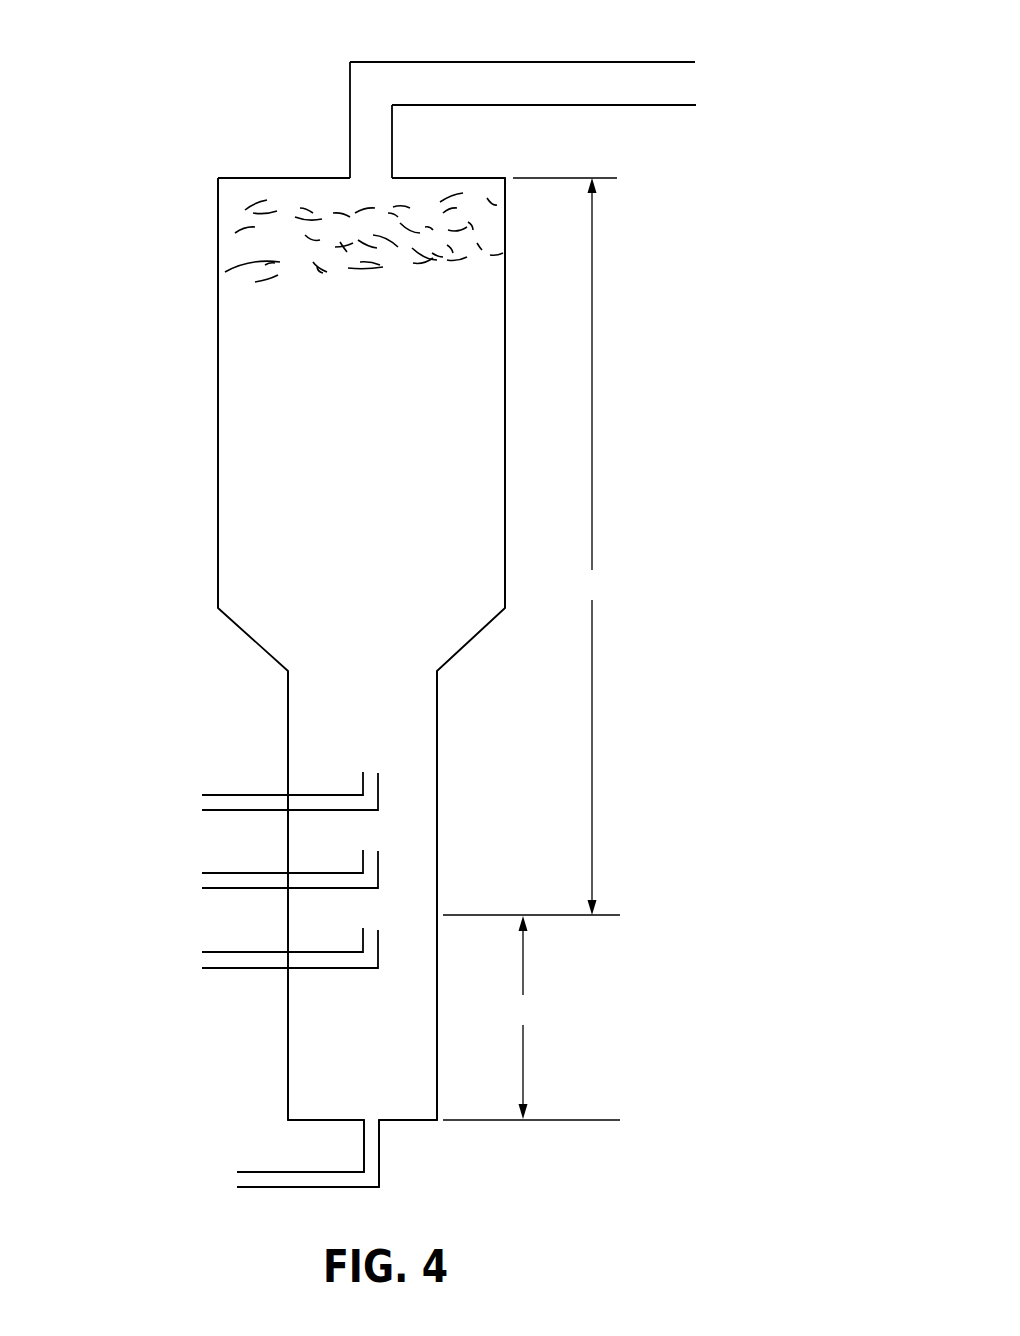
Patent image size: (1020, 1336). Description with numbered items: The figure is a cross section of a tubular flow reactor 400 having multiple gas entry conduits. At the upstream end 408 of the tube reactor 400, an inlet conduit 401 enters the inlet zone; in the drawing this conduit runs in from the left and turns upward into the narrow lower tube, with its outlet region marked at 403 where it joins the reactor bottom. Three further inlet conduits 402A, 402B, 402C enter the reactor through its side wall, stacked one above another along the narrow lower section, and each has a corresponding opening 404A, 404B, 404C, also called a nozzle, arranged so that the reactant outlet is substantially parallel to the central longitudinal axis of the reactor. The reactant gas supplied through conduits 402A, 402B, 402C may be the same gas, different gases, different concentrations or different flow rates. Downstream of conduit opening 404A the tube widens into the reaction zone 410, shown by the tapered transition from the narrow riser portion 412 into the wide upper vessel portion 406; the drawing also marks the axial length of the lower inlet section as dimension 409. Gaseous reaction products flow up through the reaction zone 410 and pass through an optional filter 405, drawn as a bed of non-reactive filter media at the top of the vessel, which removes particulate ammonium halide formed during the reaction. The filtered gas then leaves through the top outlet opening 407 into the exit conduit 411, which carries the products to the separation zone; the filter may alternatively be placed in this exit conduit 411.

The tube reactor 400 is at (168, 353).
The inlet conduit 401 is at (270, 1170).
The inlet conduit 402A is at (228, 952).
The inlet conduit 402B is at (228, 873).
The inlet conduit 402C is at (228, 795).
The inlet conduit outlet 403 is at (372, 1118).
The conduit opening 404A is at (375, 935).
The conduit opening 404B is at (375, 856).
The conduit opening 404C is at (375, 778).
The filter 405 is at (255, 228).
The disengaging vessel 406 is at (282, 178).
The outlet opening 407 is at (373, 182).
The upstream end 408 is at (412, 1122).
The lower riser length 409 is at (531, 1018).
The reaction zone 410 is at (531, 546).
The exit conduit 411 is at (560, 62).
The riser 412 is at (288, 692).